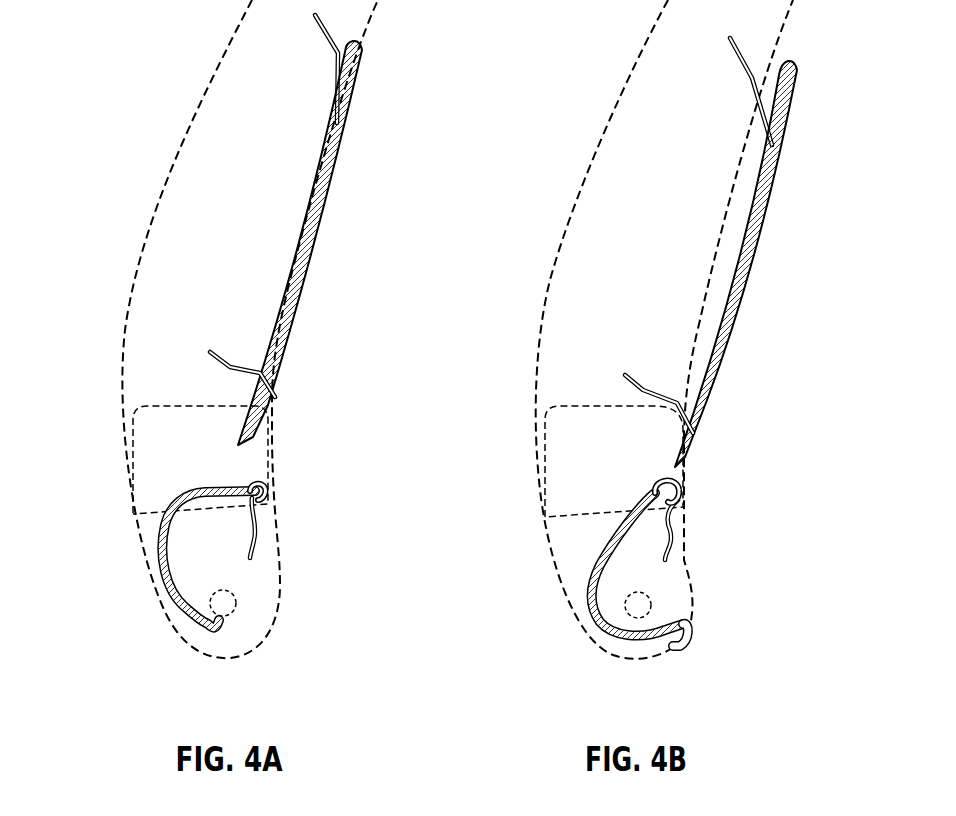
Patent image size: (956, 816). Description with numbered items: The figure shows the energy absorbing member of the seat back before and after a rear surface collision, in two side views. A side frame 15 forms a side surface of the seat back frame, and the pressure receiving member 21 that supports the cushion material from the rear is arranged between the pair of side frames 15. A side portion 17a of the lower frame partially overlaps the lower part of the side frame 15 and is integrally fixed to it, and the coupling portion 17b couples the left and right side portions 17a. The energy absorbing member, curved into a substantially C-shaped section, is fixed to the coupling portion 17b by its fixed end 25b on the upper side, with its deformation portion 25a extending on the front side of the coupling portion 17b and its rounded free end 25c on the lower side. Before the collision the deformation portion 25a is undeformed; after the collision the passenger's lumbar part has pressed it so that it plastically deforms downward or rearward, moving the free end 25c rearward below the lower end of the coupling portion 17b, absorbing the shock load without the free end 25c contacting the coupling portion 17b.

In FIG. 4A, the side frame 15 is at (208, 143).
In FIG. 4B, the side frame 15 is at (653, 80).
In FIG. 4A, the pressure receiving member 21 is at (335, 172).
In FIG. 4B, the pressure receiving member 21 is at (772, 193).
In FIG. 4A, the side portion 17a is at (257, 600).
In FIG. 4B, the side portion 17a is at (673, 590).
In FIG. 4A, the coupling portion 17b is at (273, 522).
In FIG. 4B, the coupling portion 17b is at (670, 525).
In FIG. 4A, the deformation portion 25a is at (163, 533).
In FIG. 4B, the deformation portion 25a is at (585, 588).
In FIG. 4A, the fixed end 25b is at (243, 480).
In FIG. 4B, the fixed end 25b is at (657, 490).
In FIG. 4B, the free end 25c is at (690, 640).